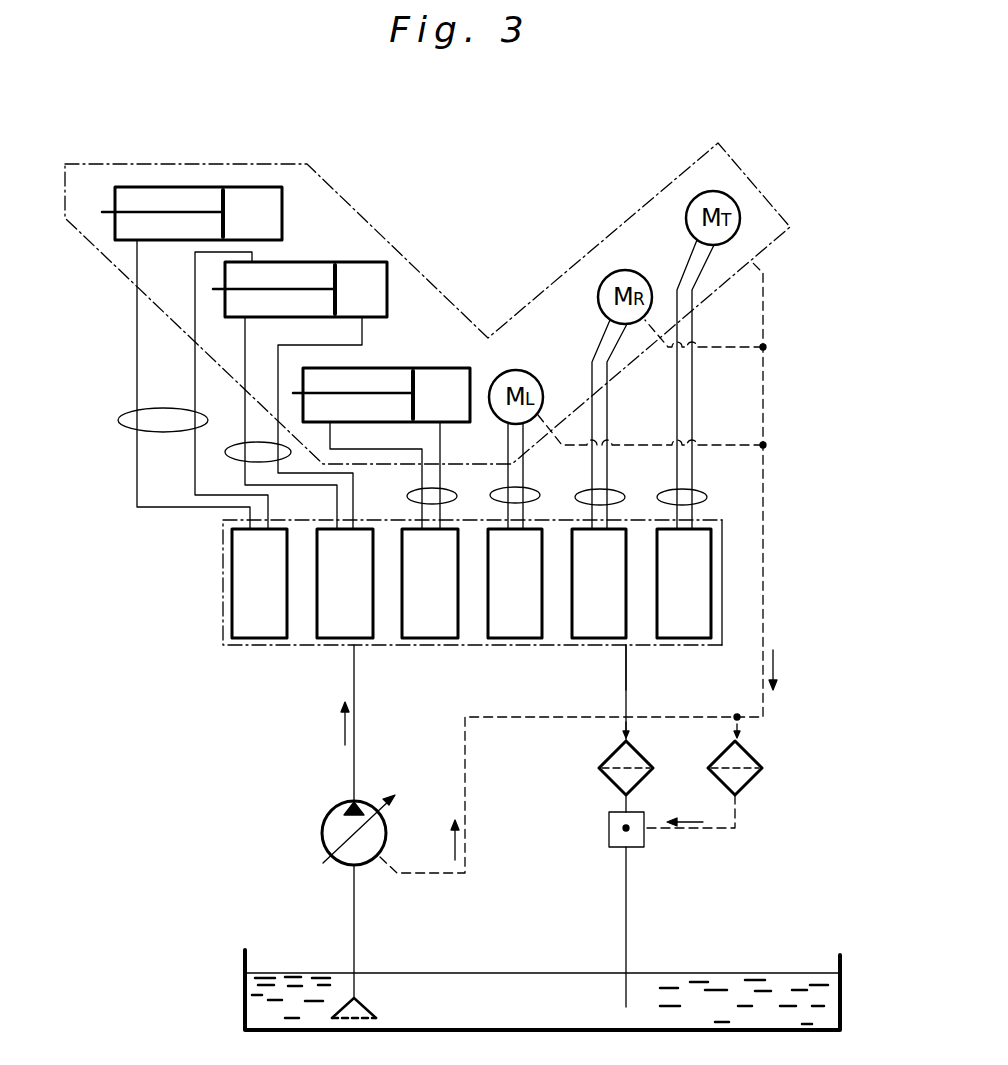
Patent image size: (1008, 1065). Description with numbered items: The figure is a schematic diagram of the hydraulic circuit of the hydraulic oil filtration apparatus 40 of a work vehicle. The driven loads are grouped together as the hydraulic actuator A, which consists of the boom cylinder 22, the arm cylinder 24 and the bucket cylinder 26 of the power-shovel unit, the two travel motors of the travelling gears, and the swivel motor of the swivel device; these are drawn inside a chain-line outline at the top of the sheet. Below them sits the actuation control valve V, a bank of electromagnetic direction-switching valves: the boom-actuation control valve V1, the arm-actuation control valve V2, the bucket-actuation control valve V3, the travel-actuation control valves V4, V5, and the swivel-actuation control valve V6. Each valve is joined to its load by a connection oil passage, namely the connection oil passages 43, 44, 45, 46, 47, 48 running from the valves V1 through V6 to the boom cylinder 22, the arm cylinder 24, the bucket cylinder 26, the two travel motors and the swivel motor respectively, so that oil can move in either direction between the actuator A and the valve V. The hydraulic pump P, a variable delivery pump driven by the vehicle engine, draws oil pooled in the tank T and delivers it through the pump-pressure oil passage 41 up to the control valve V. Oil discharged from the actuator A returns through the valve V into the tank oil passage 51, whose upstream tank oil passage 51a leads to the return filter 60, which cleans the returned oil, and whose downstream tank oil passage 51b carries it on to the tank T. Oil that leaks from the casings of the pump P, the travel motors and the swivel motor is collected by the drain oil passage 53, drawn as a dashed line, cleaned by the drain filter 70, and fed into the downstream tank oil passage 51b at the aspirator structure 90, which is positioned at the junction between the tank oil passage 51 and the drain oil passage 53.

The boom cylinder 22 is at (285, 229).
The arm cylinder 24 is at (362, 262).
The bucket cylinder 26 is at (447, 368).
The hydraulic oil filtration apparatus 40 is at (663, 164).
The hydraulic actuator A is at (580, 258).
The pump-pressure oil passage 41 is at (354, 762).
The connection oil passage 43 is at (128, 410).
The connection oil passage 44 is at (237, 460).
The connection oil passage 45 is at (408, 490).
The connection oil passage 46 is at (534, 490).
The connection oil passage 47 is at (618, 490).
The connection oil passage 48 is at (710, 490).
The tank oil passage 51 is at (630, 704).
The upstream tank oil passage 51a is at (625, 683).
The downstream tank oil passage 51b is at (626, 928).
The drain oil passage 53 is at (765, 545).
The return filter 60 is at (603, 776).
The drain filter 70 is at (758, 780).
The aspirator structure 90 is at (606, 820).
The actuation control valve V is at (721, 590).
The boom-actuation control valve V1 is at (263, 647).
The arm-actuation control valve V2 is at (343, 647).
The bucket-actuation control valve V3 is at (434, 647).
The travel-actuation control valve V4 is at (518, 647).
The travel-actuation control valve V5 is at (604, 647).
The swivel-actuation control valve V6 is at (688, 647).
The hydraulic pump P is at (322, 826).
The tank T is at (244, 987).